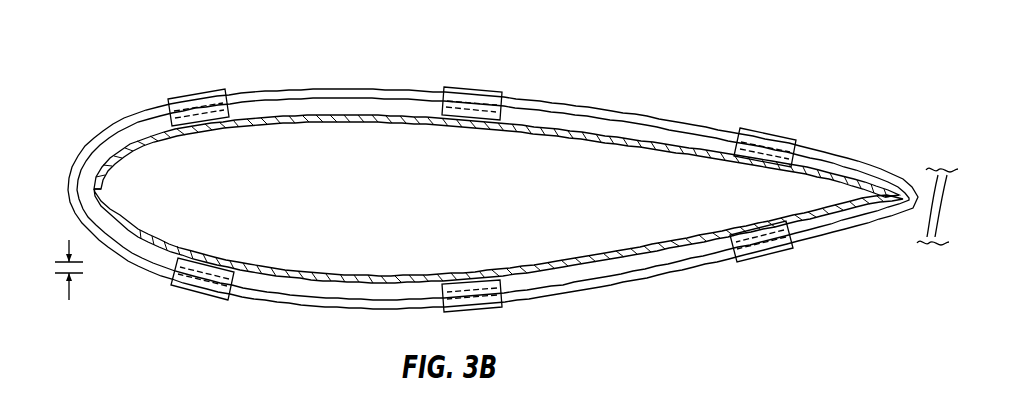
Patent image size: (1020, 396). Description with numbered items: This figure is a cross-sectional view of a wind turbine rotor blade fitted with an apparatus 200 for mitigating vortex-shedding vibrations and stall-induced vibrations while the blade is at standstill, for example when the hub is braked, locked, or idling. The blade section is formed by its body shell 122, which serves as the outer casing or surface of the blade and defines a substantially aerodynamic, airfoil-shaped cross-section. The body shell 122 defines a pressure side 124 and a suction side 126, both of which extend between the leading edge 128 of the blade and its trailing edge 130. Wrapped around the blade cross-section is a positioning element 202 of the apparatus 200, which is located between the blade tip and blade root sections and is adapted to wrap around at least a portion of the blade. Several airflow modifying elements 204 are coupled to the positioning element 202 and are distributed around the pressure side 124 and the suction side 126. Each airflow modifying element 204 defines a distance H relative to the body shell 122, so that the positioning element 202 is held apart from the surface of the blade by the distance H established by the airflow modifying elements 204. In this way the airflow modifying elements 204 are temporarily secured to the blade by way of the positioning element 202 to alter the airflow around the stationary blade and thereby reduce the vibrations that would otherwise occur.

The apparatus 200 is at (796, 64).
The positioning element 202 is at (293, 304).
The airflow modifying element 204 is at (500, 91).
The suction side 126 is at (648, 133).
The pressure side 124 is at (677, 254).
The body shell 122 is at (134, 248).
The leading edge 128 is at (86, 187).
The trailing edge 130 is at (899, 177).
The distance H is at (69, 288).